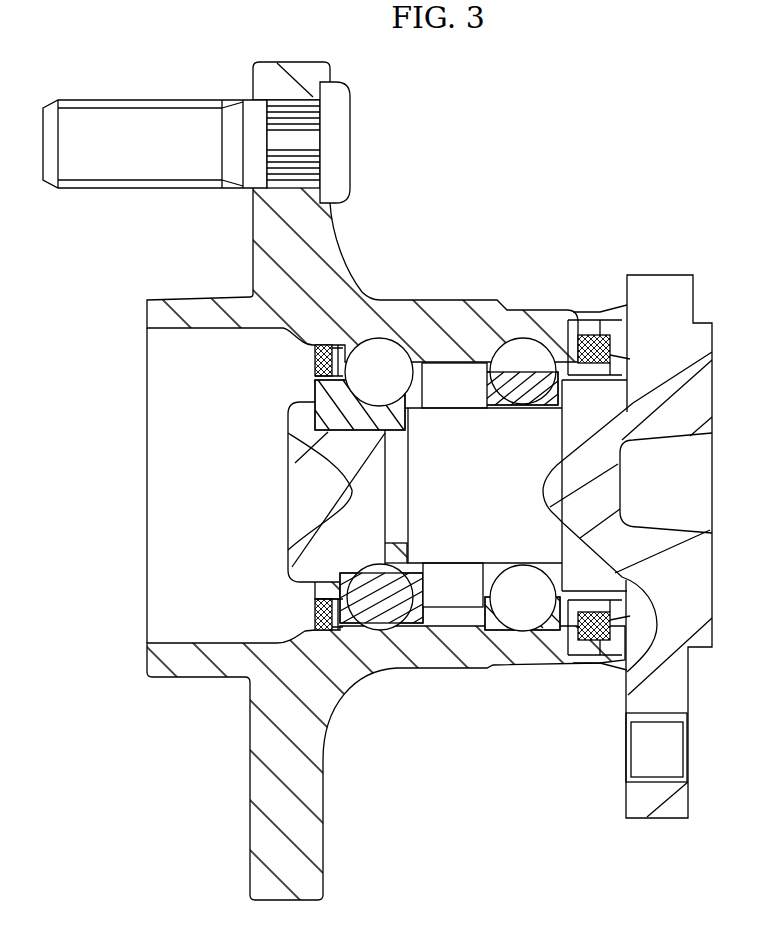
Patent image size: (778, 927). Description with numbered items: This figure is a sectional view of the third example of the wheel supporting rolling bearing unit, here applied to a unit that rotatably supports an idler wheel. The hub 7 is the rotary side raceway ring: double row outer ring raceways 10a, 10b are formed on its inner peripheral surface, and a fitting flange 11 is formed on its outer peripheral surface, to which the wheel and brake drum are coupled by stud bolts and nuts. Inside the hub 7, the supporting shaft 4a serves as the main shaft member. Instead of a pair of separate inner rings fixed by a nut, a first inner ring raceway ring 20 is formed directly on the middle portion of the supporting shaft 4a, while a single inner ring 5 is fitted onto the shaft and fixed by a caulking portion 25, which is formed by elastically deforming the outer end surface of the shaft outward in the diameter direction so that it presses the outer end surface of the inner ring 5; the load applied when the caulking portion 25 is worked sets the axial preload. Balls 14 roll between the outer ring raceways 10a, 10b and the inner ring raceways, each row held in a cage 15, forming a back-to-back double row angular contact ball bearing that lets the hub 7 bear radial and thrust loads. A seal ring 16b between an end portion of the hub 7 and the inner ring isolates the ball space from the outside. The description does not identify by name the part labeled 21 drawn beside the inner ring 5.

The hub 7 is at (462, 322).
The fitting flange 11 is at (287, 825).
The caulking portion 25 is at (298, 427).
The inner ring 5 is at (322, 398).
The raceway 21 is at (377, 381).
The outer ring raceway 10a is at (398, 627).
The outer ring raceway 10b is at (518, 633).
The first inner ring raceway ring 20 is at (545, 612).
The balls 14 is at (403, 358).
The cage 15 is at (430, 408).
The supporting shaft 4a is at (465, 520).
The seal ring 16b is at (600, 333).